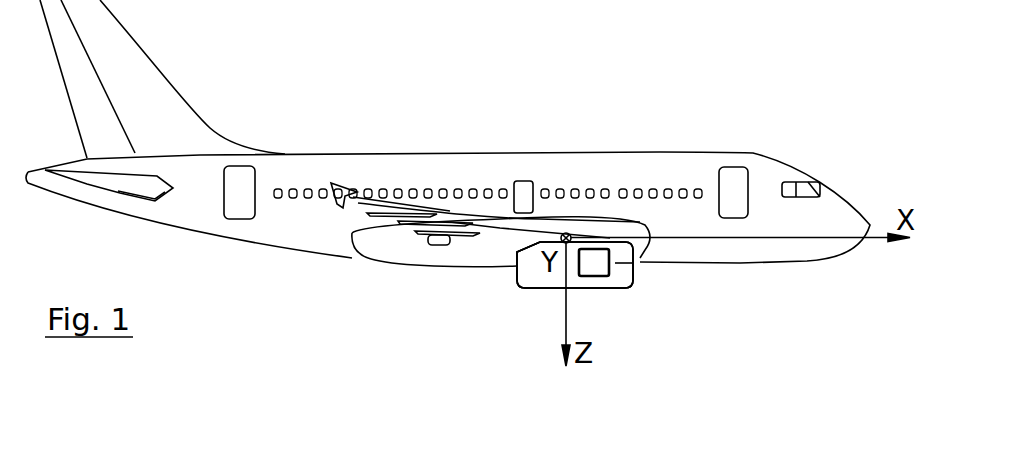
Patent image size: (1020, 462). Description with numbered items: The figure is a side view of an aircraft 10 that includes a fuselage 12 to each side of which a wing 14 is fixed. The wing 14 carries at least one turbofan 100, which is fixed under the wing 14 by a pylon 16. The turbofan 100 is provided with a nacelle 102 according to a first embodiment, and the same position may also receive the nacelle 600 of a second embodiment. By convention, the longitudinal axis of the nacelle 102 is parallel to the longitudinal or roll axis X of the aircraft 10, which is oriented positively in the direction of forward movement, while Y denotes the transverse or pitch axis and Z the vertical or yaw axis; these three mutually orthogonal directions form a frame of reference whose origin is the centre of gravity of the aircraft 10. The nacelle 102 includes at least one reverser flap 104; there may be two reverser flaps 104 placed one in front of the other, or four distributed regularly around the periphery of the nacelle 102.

The aircraft 10 is at (760, 63).
The fuselage 12 is at (758, 177).
The wing 14 is at (447, 213).
The pylon 16 is at (535, 240).
The turbofan 100 is at (508, 302).
The nacelle 102 is at (555, 280).
The nacelle 600 is at (555, 280).
The reverser flap 104 is at (597, 262).